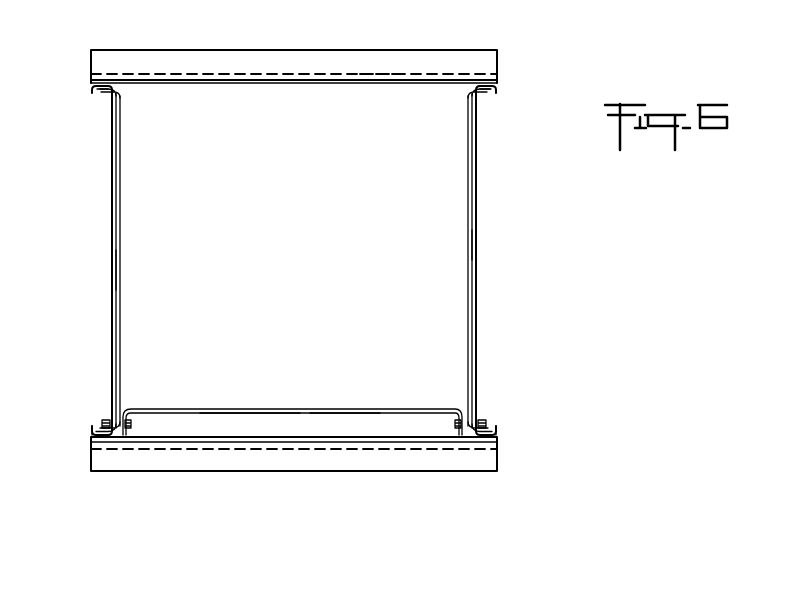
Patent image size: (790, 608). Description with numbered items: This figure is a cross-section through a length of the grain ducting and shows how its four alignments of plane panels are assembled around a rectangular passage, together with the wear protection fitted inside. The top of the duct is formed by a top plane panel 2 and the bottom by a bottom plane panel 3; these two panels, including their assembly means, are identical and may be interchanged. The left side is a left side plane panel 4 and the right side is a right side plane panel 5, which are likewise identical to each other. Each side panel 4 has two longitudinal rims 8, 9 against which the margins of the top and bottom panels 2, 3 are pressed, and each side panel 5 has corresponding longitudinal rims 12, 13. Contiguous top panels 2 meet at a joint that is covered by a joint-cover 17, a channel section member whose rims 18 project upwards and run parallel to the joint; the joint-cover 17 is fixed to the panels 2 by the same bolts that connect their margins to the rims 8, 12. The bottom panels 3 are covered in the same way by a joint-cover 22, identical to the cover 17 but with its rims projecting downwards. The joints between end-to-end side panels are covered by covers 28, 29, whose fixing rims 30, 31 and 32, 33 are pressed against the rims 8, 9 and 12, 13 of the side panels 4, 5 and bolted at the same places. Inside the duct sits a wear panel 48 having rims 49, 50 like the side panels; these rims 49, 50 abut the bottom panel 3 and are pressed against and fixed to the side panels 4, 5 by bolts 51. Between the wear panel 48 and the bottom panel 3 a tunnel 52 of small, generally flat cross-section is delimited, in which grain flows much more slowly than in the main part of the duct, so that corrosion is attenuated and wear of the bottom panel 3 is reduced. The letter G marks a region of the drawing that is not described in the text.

The top plane panel 2 is at (284, 84).
The bottom plane panel 3 is at (245, 440).
The left side plane panel 4 is at (122, 296).
The right side plane panel 5 is at (466, 293).
The longitudinal rim 8 is at (92, 86).
The longitudinal rim 9 is at (91, 436).
The longitudinal rim 12 is at (498, 87).
The longitudinal rim 13 is at (498, 437).
The joint-cover 17 is at (377, 78).
The rim 18 is at (181, 58).
The joint-cover 22 is at (288, 463).
The cover 28 is at (112, 268).
The cover 29 is at (476, 248).
The fixing rim 30 is at (93, 93).
The fixing rim 31 is at (93, 426).
The fixing rim 32 is at (494, 95).
The fixing rim 33 is at (497, 431).
The wear panel 48 is at (258, 409).
The rim 49 is at (130, 433).
The rim 50 is at (456, 432).
The bolt 51 is at (105, 418).
The tunnel 52 is at (345, 427).
The gap G is at (97, 119).